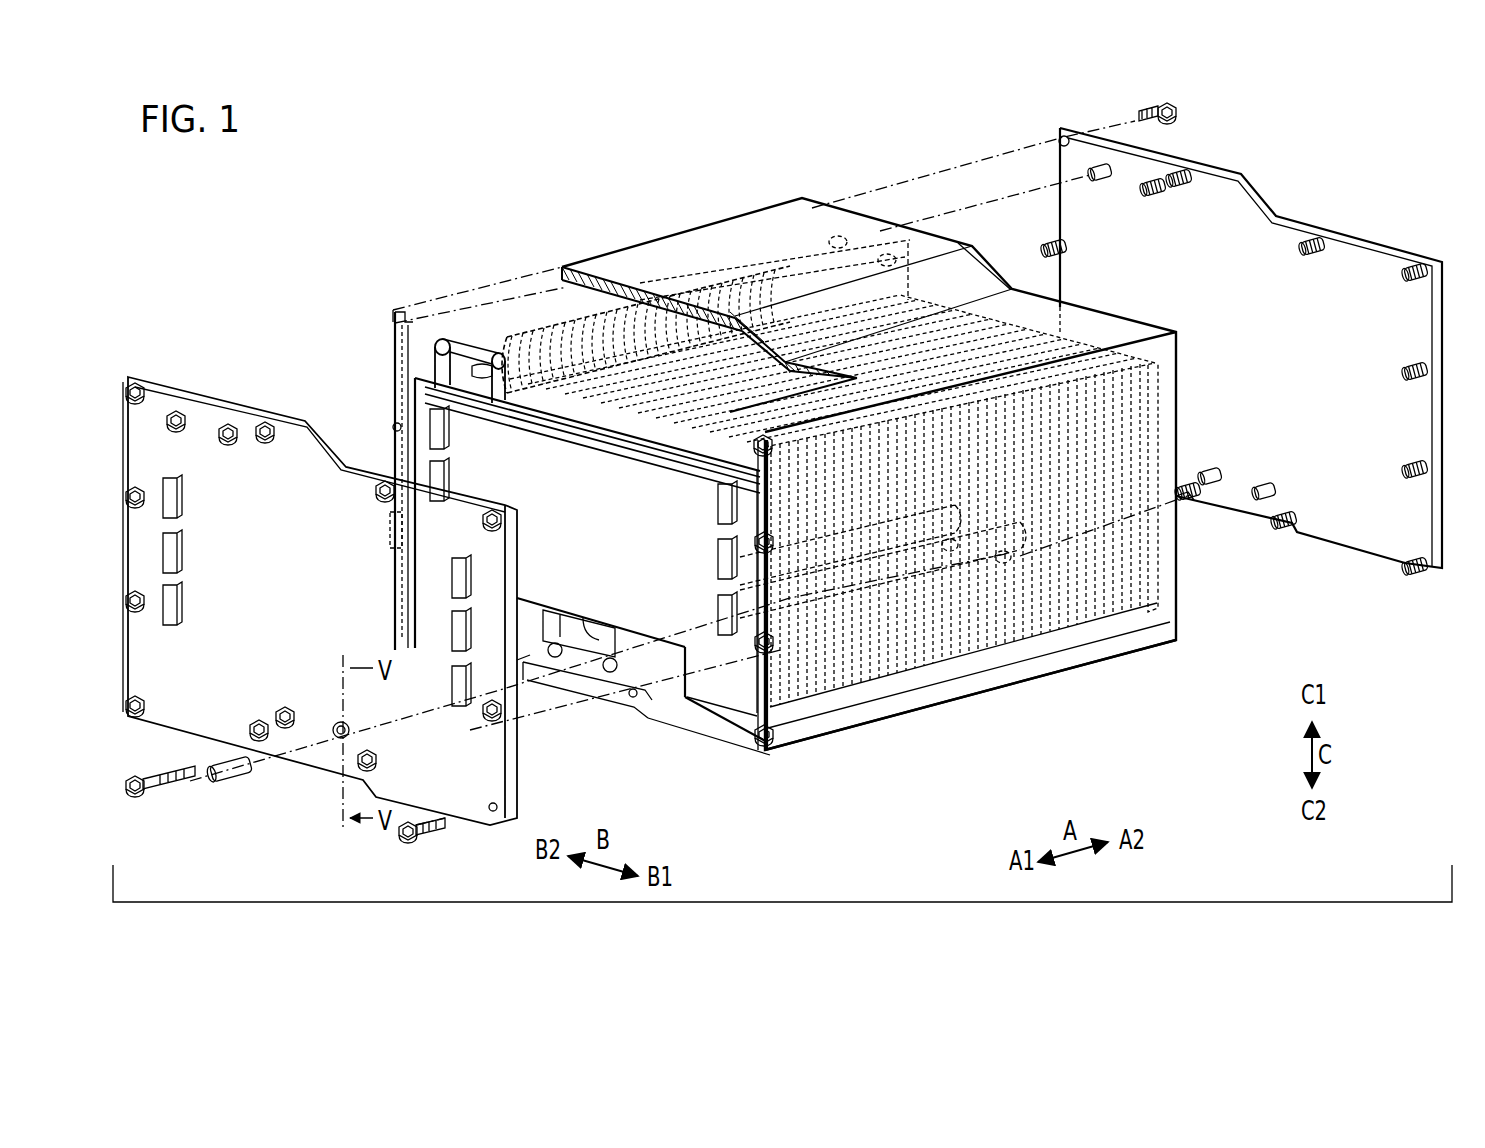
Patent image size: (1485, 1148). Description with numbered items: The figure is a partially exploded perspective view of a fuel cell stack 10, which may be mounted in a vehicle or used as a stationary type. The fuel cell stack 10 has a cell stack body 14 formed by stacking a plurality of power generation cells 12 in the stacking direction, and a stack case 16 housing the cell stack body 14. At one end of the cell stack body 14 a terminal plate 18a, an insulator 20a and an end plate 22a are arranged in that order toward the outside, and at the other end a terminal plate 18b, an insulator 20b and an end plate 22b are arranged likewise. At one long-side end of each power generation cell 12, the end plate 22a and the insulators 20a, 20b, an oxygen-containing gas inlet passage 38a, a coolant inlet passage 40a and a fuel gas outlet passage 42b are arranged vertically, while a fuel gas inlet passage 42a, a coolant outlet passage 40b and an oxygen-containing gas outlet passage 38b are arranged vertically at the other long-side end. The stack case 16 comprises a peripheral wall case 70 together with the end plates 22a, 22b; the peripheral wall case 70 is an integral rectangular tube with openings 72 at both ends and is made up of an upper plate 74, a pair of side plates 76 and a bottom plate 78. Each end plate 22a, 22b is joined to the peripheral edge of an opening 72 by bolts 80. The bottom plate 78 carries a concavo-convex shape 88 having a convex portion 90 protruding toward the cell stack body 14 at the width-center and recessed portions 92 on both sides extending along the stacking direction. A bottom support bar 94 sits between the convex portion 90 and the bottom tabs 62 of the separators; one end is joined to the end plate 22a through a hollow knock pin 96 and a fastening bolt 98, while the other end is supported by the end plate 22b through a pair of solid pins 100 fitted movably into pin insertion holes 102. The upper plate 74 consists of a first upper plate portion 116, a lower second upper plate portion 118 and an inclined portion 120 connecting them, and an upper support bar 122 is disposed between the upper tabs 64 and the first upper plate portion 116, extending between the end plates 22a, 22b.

The fuel cell stack 10 is at (384, 183).
The power generation cell 12 is at (1083, 620).
The cell stack body 14 is at (968, 674).
The stack case 16 is at (952, 138).
The terminal plate 18a is at (560, 410).
The terminal plate 18b is at (1136, 608).
The insulator 20a is at (423, 398).
The insulator 20b is at (1160, 601).
The end plate 22a is at (311, 749).
The end plate 22b is at (1373, 540).
The oxygen-containing gas inlet passage 38a is at (447, 431).
The oxygen-containing gas outlet passage 38b is at (452, 690).
The coolant inlet passage 40a is at (447, 480).
The coolant outlet passage 40b is at (455, 628).
The fuel gas inlet passage 42a is at (455, 577).
The fuel gas outlet passage 42b is at (180, 610).
The bottom tab 62 is at (597, 625).
The upper tab 64 is at (540, 333).
The peripheral wall case 70 is at (806, 740).
The opening 72 is at (1170, 538).
The upper plate 74 is at (1183, 213).
The side plate 76 is at (836, 706).
The bottom plate 78 is at (713, 727).
The bolt 80 is at (1182, 113).
The concavo-convex shape 88 is at (563, 702).
The convex portion 90 is at (614, 690).
The recessed portion 92 is at (523, 637).
The bottom support bar 94 is at (645, 672).
The hollow knock pin 96 is at (235, 768).
The fastening bolt 98 is at (226, 442).
The solid pin 100 is at (1110, 170).
The pin insertion hole 102 is at (838, 236).
The first upper plate portion 116 is at (935, 245).
The second upper plate portion 118 is at (1103, 317).
The inclined portion 120 is at (990, 278).
The upper support bar 122 is at (428, 359).